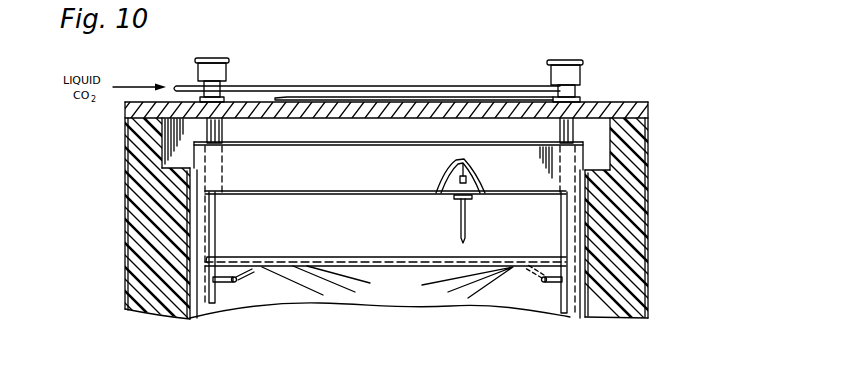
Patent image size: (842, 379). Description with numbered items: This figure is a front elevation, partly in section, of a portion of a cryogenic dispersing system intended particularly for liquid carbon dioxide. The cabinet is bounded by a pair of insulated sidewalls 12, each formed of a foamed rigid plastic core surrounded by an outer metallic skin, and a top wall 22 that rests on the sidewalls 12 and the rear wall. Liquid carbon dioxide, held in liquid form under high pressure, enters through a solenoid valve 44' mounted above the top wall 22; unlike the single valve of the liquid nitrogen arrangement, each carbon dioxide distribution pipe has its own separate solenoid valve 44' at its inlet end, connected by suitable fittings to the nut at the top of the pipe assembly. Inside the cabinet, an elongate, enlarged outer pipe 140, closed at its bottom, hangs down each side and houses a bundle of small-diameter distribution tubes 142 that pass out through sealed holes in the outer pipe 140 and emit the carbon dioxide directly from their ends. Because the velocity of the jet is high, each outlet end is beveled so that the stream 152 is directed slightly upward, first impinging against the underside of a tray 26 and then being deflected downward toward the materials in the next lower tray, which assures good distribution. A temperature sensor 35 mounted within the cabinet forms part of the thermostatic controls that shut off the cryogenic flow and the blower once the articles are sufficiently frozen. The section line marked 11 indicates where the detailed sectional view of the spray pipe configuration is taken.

The section line 11- 11 is at (215, 24).
The sidewalls 12 is at (119, 270).
The top wall 22 is at (513, 96).
The solenoid valve 44' is at (401, 99).
The tray 26 is at (416, 259).
The temperature sensor 35 is at (470, 224).
The outer pipe 140 is at (219, 213).
The distribution tubes 142 is at (222, 283).
The stream 152 is at (278, 273).